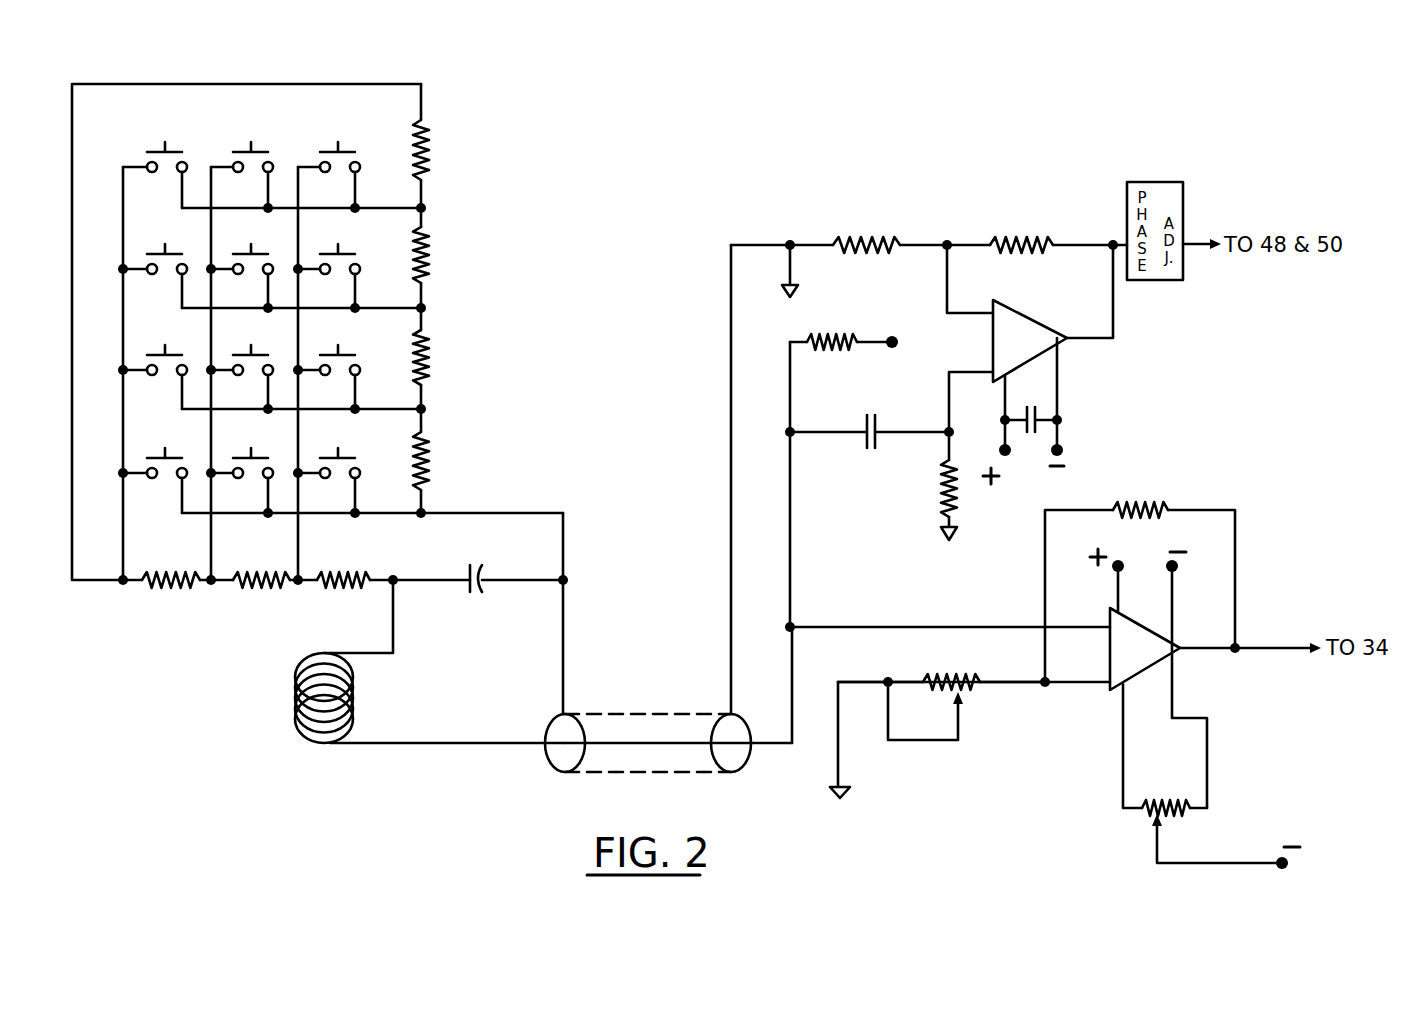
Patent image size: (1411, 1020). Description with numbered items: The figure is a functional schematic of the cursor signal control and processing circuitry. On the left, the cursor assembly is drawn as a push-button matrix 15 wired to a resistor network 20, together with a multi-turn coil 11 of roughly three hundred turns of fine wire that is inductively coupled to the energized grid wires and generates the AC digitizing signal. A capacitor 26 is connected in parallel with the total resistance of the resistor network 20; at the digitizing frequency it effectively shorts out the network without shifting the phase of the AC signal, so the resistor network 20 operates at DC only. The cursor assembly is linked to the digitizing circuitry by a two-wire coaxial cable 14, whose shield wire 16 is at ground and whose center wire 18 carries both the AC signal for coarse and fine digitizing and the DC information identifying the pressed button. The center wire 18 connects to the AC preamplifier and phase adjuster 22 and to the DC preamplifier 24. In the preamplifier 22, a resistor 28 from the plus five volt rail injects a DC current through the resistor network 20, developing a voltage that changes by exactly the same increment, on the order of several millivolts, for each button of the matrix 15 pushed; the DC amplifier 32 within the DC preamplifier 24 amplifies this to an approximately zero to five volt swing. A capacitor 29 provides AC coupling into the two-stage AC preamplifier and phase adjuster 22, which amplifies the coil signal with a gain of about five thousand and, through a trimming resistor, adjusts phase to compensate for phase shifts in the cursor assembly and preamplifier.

The push-button matrix 15 is at (242, 110).
The resistor network 20 is at (238, 612).
The multi-turn coil 11 is at (295, 718).
The capacitor 26 is at (484, 590).
The center wire 18 is at (490, 726).
The coaxial cable 14 is at (543, 768).
The wire 16 is at (634, 710).
The AC preamplifier and phase adjuster 22 is at (962, 214).
The resistor 28 is at (830, 338).
The capacitor 29 is at (860, 443).
The DC amplifier 32 is at (1113, 687).
The DC preamplifier 24 is at (972, 773).